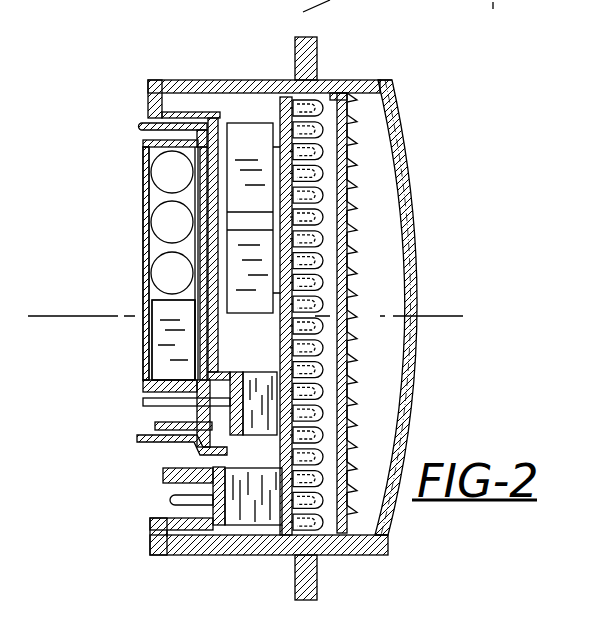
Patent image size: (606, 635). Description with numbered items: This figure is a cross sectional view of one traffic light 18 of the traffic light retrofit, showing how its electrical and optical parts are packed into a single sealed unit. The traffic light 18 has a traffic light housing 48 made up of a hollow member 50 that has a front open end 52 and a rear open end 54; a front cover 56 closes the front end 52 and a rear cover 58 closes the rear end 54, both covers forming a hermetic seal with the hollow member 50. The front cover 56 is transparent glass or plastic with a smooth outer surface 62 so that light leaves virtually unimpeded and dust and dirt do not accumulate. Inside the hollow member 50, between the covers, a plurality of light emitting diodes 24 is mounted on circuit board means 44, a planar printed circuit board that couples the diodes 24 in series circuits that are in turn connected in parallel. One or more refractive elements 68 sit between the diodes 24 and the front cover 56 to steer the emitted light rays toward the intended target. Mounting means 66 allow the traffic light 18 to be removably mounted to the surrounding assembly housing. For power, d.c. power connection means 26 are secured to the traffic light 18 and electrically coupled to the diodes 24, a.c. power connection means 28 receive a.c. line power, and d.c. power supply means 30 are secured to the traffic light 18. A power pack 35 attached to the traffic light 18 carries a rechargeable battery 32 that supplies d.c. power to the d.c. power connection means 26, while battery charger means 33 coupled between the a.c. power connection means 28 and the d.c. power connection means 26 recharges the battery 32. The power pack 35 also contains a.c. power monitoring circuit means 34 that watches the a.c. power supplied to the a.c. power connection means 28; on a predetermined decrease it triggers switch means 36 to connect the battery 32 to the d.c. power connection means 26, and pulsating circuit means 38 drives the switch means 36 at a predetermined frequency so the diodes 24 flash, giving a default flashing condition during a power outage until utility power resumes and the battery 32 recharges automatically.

The traffic light 18 is at (468, 278).
The light emitting diodes 24 is at (328, 541).
The d.c. power connection means 26 is at (147, 387).
The a.c. power connection means 28 is at (165, 500).
The d.c. power supply means 30 is at (250, 135).
The battery 32 is at (155, 222).
The battery charger means 33 is at (237, 256).
The a.c. power monitoring circuit means 34 is at (143, 330).
The switch means 36 is at (173, 340).
The pulsating circuit means 38 is at (146, 263).
The power pack 35 is at (130, 188).
The circuit board means 44 is at (283, 108).
The traffic light housing 48 is at (366, 553).
The hollow member 50 is at (389, 80).
The front open end 52 is at (362, 265).
The rear open end 54 is at (178, 460).
The front cover 56 is at (408, 180).
The rear cover 58 is at (163, 477).
The smooth outer surface 62 is at (410, 382).
The mounting means 66 is at (313, 53).
The refractive elements 68 is at (347, 152).